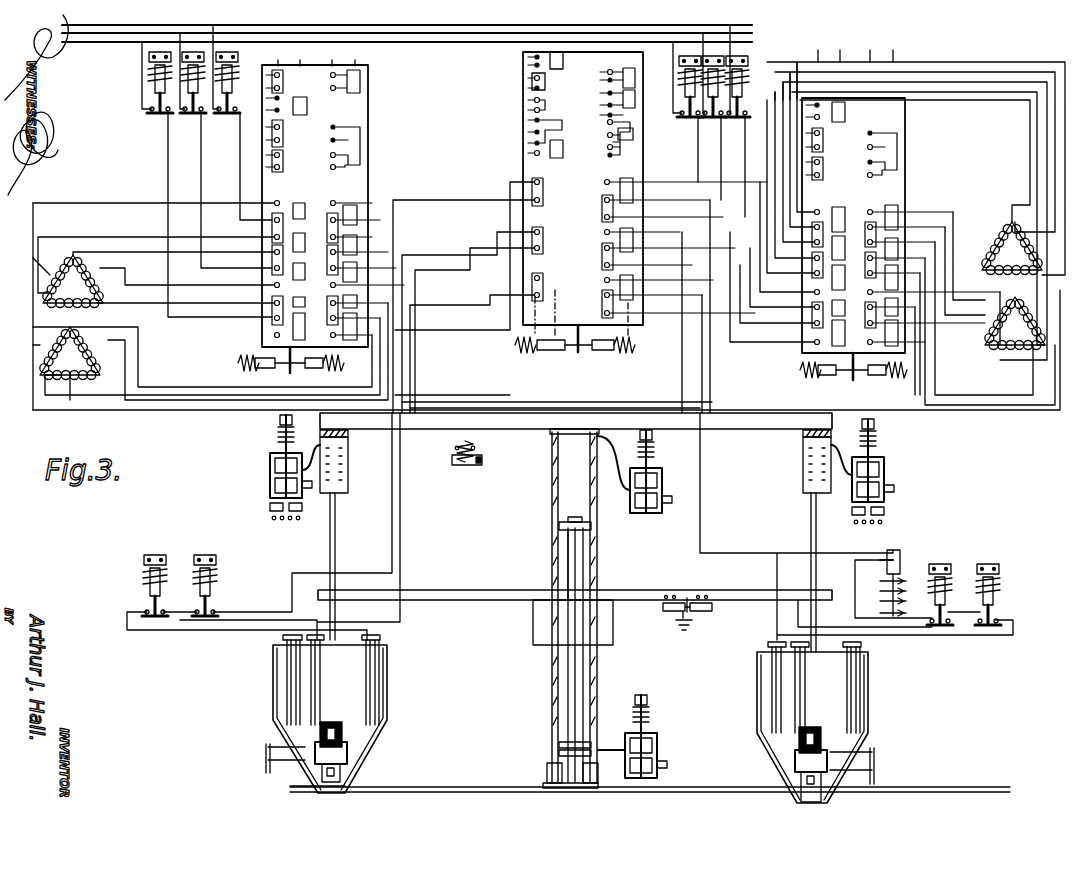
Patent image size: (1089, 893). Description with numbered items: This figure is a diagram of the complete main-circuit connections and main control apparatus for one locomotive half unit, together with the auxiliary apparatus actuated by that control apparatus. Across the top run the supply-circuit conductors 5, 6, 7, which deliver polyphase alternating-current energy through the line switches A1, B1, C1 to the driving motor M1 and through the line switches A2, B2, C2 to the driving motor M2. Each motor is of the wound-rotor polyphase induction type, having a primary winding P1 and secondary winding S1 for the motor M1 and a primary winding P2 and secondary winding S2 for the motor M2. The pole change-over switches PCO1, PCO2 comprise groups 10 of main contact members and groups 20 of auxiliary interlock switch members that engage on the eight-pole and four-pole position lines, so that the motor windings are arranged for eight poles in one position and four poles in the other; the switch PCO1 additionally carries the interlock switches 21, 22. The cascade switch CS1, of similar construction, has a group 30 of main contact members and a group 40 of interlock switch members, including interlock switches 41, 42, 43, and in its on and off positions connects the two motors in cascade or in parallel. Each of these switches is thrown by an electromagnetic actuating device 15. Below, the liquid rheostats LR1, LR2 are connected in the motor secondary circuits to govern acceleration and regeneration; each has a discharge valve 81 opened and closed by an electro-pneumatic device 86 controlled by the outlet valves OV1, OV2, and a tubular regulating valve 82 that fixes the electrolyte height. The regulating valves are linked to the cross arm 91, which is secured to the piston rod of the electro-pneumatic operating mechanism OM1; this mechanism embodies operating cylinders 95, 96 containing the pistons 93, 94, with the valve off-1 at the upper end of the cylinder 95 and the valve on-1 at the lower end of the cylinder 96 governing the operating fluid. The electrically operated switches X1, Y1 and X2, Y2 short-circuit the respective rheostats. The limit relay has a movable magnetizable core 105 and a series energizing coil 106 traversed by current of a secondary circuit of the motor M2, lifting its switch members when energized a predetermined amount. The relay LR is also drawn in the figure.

The supply-circuit conductor 5 is at (410, 42).
The supply-circuit conductor 6 is at (428, 33).
The supply-circuit conductor 7 is at (446, 25).
The group of main contact members 10 is at (585, 239).
The electromagnetic actuating device 15 is at (300, 372).
The group of auxiliary interlock switch members 20 is at (575, 151).
The interlock switch 21 is at (287, 82).
The interlock switch 22 is at (345, 82).
The group of main contact members 30 is at (561, 242).
The group of interlock switch members 40 is at (577, 119).
The interlock switch 41 is at (565, 64).
The interlock switch 42 is at (547, 85).
The interlock switch 43 is at (599, 85).
The discharge valve 81 is at (347, 752).
The tubular regulating valve 82 is at (341, 730).
The electro-pneumatic device 86 is at (348, 462).
The cross arm 91 is at (468, 590).
The piston 93 is at (568, 530).
The piston 94 is at (575, 742).
The operating cylinder 95 is at (592, 524).
The operating cylinder 96 is at (598, 656).
The movable magnetizable core 105 is at (895, 558).
The series energizing coil 106 is at (889, 562).
The line switch A1 is at (160, 94).
The line switch B1 is at (193, 94).
The line switch C1 is at (227, 94).
The line switch A2 is at (689, 99).
The line switch B2 is at (713, 98).
The line switch C2 is at (738, 98).
The pole change-over switch PCO1 is at (333, 197).
The pole change-over switch PCO2 is at (901, 195).
The cascade switch CS1 is at (645, 193).
The primary winding P1 is at (73, 281).
The secondary winding S1 is at (70, 353).
The driving motor M1 is at (55, 314).
The primary winding P2 is at (1012, 248).
The secondary winding S2 is at (1015, 323).
The driving motor M2 is at (1000, 290).
The outlet valve OV1 is at (269, 470).
The outlet valve OV2 is at (886, 472).
The electromagnetically operated valve off-1 is at (645, 471).
The electromagnetically controlled valve on-1 is at (644, 736).
The relay LR is at (596, 545).
The electro-pneumatic operating mechanism OM1 is at (566, 630).
The liquid rheostat LR1 is at (387, 690).
The liquid rheostat LR2 is at (757, 690).
The electrically operated switch X1 is at (153, 585).
The electrically operated switch Y1 is at (205, 585).
The electrically operated switch X2 is at (940, 594).
The electrically operated switch Y2 is at (988, 594).